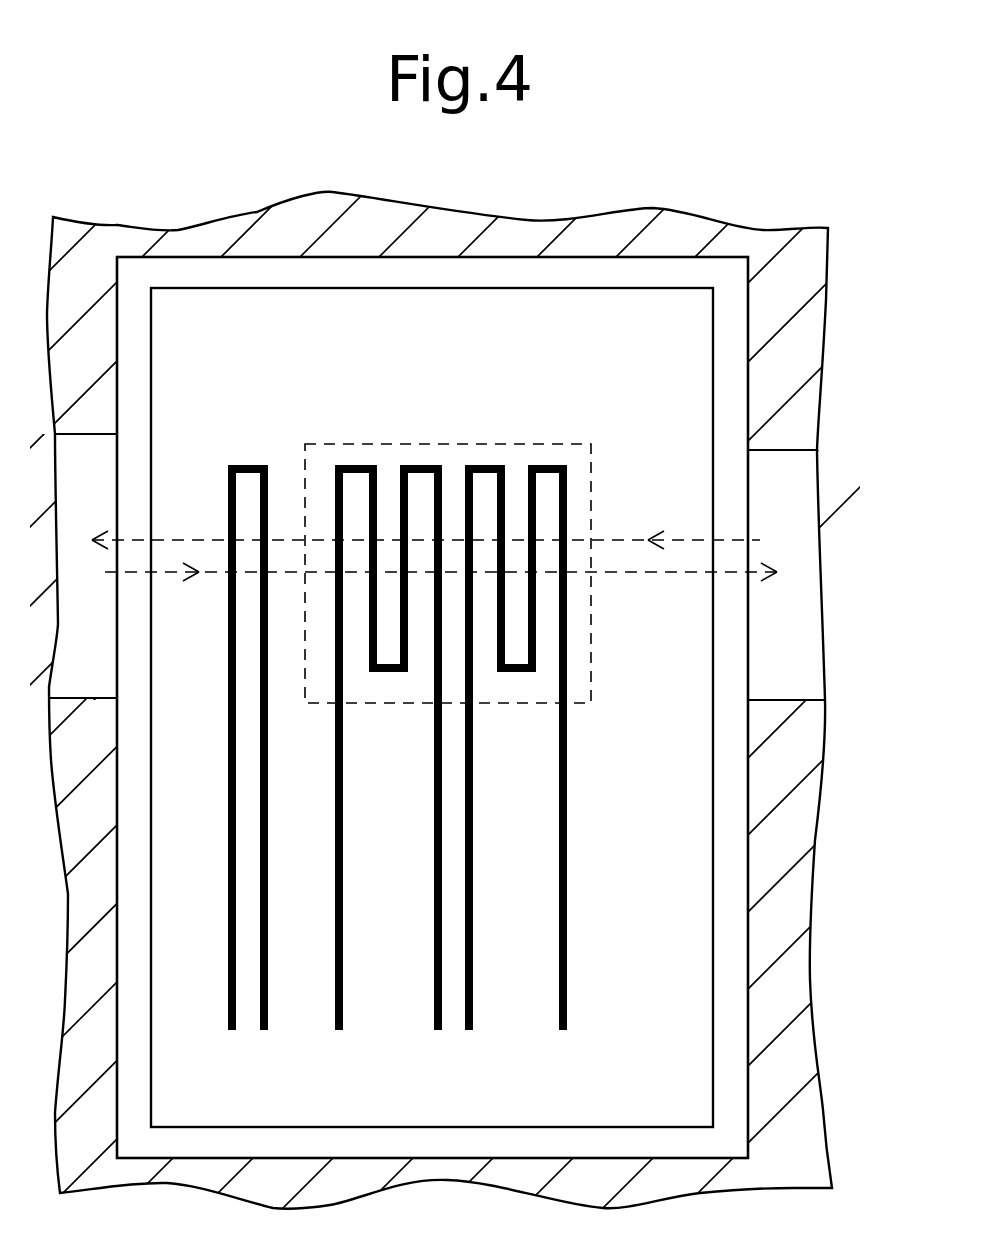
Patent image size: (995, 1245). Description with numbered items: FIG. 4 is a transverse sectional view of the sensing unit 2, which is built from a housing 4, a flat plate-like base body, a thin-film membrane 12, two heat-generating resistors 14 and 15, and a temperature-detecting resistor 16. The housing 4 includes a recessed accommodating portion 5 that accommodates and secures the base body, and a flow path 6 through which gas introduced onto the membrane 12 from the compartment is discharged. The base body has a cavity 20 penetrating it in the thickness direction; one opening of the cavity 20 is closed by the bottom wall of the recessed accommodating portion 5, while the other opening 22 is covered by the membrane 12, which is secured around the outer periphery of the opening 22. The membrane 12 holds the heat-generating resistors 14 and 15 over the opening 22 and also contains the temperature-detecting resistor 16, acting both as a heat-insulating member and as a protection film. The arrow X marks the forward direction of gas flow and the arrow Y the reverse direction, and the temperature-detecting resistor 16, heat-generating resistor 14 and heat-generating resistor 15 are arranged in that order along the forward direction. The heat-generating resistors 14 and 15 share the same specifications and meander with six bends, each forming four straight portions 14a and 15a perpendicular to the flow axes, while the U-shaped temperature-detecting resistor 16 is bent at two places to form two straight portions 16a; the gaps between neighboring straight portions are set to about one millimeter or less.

The sensing unit 2 is at (800, 218).
The housing 4 is at (813, 337).
The recessed accommodating portion 5 is at (748, 849).
The flow path 6 is at (793, 450).
The membrane 12 is at (695, 978).
The heat-generating resistor 14 is at (351, 448).
The straight portions 14a is at (335, 493).
The heat-generating resistor 15 is at (489, 448).
The straight portions 15a is at (503, 483).
The temperature-detecting resistor 16 is at (231, 450).
The straight portions 16a is at (228, 500).
The cavity 20 is at (592, 641).
The opening 22 is at (430, 591).